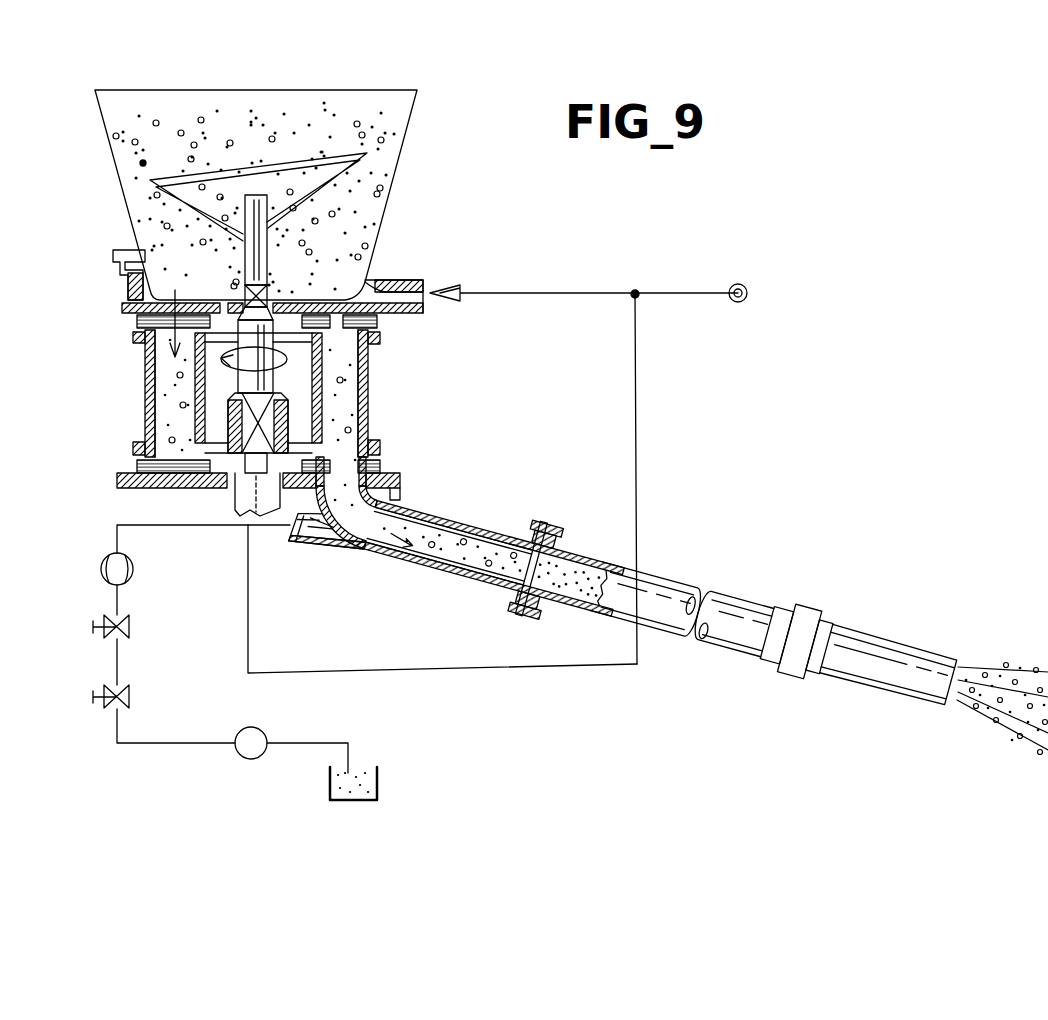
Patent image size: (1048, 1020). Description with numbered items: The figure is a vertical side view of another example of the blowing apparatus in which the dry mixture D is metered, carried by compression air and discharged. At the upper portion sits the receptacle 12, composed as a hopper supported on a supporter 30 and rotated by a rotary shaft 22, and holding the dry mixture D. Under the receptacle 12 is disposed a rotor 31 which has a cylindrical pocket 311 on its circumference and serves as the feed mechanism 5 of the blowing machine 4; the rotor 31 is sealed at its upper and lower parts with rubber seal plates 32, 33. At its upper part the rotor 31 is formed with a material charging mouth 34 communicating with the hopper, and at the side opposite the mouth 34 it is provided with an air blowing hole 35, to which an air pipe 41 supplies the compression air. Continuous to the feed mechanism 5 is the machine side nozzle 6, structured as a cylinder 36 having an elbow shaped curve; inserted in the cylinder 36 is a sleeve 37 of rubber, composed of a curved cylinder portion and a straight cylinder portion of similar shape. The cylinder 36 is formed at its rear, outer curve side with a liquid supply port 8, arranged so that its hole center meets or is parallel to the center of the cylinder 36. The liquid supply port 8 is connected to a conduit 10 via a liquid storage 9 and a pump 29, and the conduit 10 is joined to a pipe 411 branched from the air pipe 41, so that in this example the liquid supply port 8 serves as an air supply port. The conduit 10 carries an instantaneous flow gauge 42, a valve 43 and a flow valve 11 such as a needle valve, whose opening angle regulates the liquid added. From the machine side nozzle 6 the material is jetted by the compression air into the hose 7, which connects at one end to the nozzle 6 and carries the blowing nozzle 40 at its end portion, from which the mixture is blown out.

The blowing machine 4 is at (457, 406).
The feed mechanism 5 is at (368, 427).
The machine side nozzle 6 is at (457, 511).
The hose 7 is at (667, 592).
The liquid supply port 8 is at (305, 543).
The liquid storage 9 is at (372, 787).
The conduit 10 is at (113, 600).
The flow valve 11 is at (100, 707).
The receptacle 12 is at (395, 190).
The rotary shaft 22 is at (237, 498).
The pump 29 is at (258, 737).
The supporter 30 is at (140, 294).
The rotor 31 is at (370, 402).
The rubber seal plate 32 is at (138, 320).
The rubber seal plate 33 is at (137, 465).
The material charging mouth 34 is at (132, 308).
The air blowing hole 35 is at (396, 288).
The cylinder 36 is at (498, 540).
The sleeve 37 is at (410, 560).
The blowing nozzle 40 is at (863, 640).
The air pipe 41 is at (548, 297).
The instantaneous flow gauge 42 is at (100, 563).
The valve 43 is at (93, 628).
The cylindrical pocket 311 is at (160, 383).
The pipe 411 is at (425, 673).
The dry mixture D is at (140, 163).